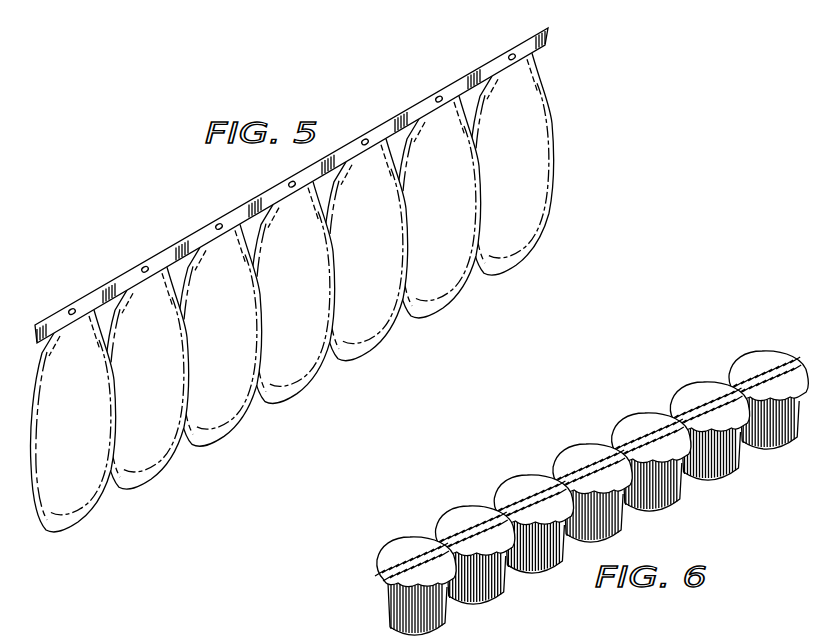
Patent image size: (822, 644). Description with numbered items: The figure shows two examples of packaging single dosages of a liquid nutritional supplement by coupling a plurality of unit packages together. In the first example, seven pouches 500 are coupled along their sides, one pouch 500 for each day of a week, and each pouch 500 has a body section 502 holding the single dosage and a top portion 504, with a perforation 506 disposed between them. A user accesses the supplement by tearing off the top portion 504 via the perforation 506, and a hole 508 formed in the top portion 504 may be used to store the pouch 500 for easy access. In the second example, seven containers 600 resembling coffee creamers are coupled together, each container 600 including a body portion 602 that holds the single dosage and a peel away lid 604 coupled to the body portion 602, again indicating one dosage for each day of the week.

In FIG. 5, the pouch 500 is at (588, 140).
In FIG. 5, the body section 502 is at (553, 185).
In FIG. 5, the top portion 504 is at (553, 37).
In FIG. 5, the perforation 506 is at (72, 331).
In FIG. 5, the hole 508 is at (150, 264).
In FIG. 6, the container 600 is at (549, 403).
In FIG. 6, the body portion 602 is at (385, 603).
In FIG. 6, the peel away lid 604 is at (390, 540).